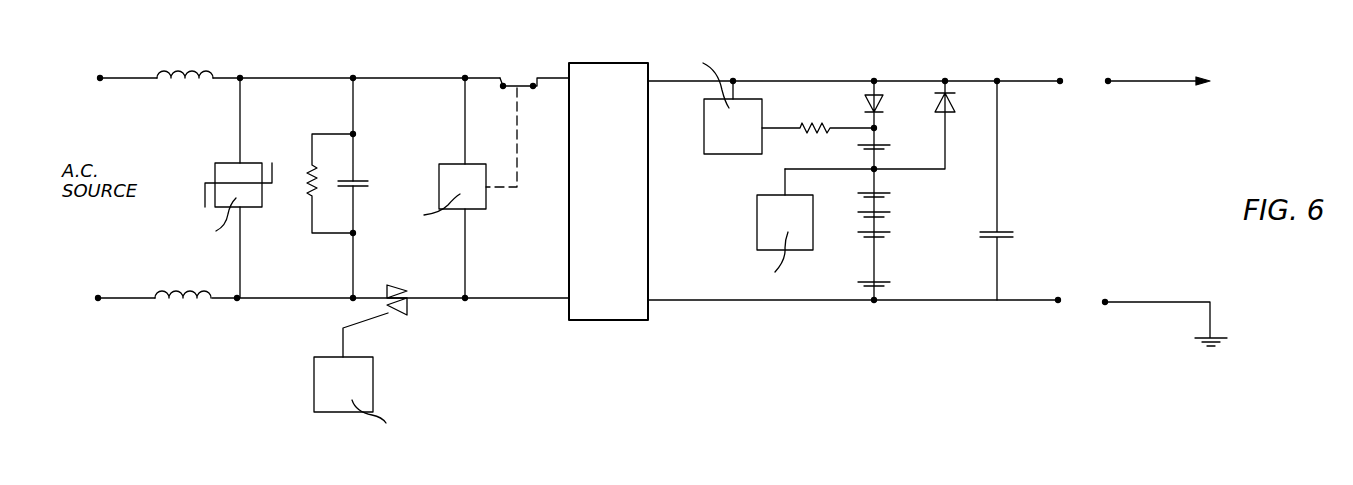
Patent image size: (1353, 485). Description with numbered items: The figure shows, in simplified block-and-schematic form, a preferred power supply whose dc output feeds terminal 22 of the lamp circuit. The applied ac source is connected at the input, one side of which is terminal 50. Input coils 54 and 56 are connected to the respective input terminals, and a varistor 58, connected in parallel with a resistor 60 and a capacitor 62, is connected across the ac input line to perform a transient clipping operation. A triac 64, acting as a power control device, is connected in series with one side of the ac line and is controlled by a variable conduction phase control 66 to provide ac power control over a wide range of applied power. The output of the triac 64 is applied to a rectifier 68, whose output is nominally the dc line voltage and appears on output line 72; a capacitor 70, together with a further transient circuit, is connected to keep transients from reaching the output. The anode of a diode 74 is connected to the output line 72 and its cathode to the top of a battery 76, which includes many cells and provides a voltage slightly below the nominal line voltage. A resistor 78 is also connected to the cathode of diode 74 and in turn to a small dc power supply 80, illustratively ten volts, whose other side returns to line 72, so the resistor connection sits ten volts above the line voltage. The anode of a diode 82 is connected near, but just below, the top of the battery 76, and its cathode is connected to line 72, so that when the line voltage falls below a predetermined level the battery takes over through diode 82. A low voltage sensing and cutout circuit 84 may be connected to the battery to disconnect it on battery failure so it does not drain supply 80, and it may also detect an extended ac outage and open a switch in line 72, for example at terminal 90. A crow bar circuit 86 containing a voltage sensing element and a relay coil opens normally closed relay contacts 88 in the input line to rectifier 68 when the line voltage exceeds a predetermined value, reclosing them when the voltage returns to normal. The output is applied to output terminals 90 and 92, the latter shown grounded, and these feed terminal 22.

The terminal 22 is at (1110, 85).
The terminal 50 is at (100, 80).
The input coil 54 is at (182, 84).
The input coil 56 is at (180, 303).
The varistor 58 is at (247, 163).
The resistor 60 is at (307, 190).
The capacitor 62 is at (368, 180).
The triac 64 is at (390, 283).
The variable conduction phase control 66 is at (374, 378).
The rectifier 68 is at (603, 322).
The capacitor 70 is at (1008, 229).
The output line 72 is at (794, 80).
The diode 74 is at (862, 100).
The battery 76 is at (899, 225).
The resistor 78 is at (820, 135).
The dc power supply 80 is at (704, 150).
The diode 82 is at (883, 125).
The low voltage sensing and cutout circuit 84 is at (757, 242).
The crow bar circuit 86 is at (487, 205).
The relay contacts 88 is at (534, 89).
The output terminal 90 is at (1060, 84).
The output terminal 92 is at (1059, 299).